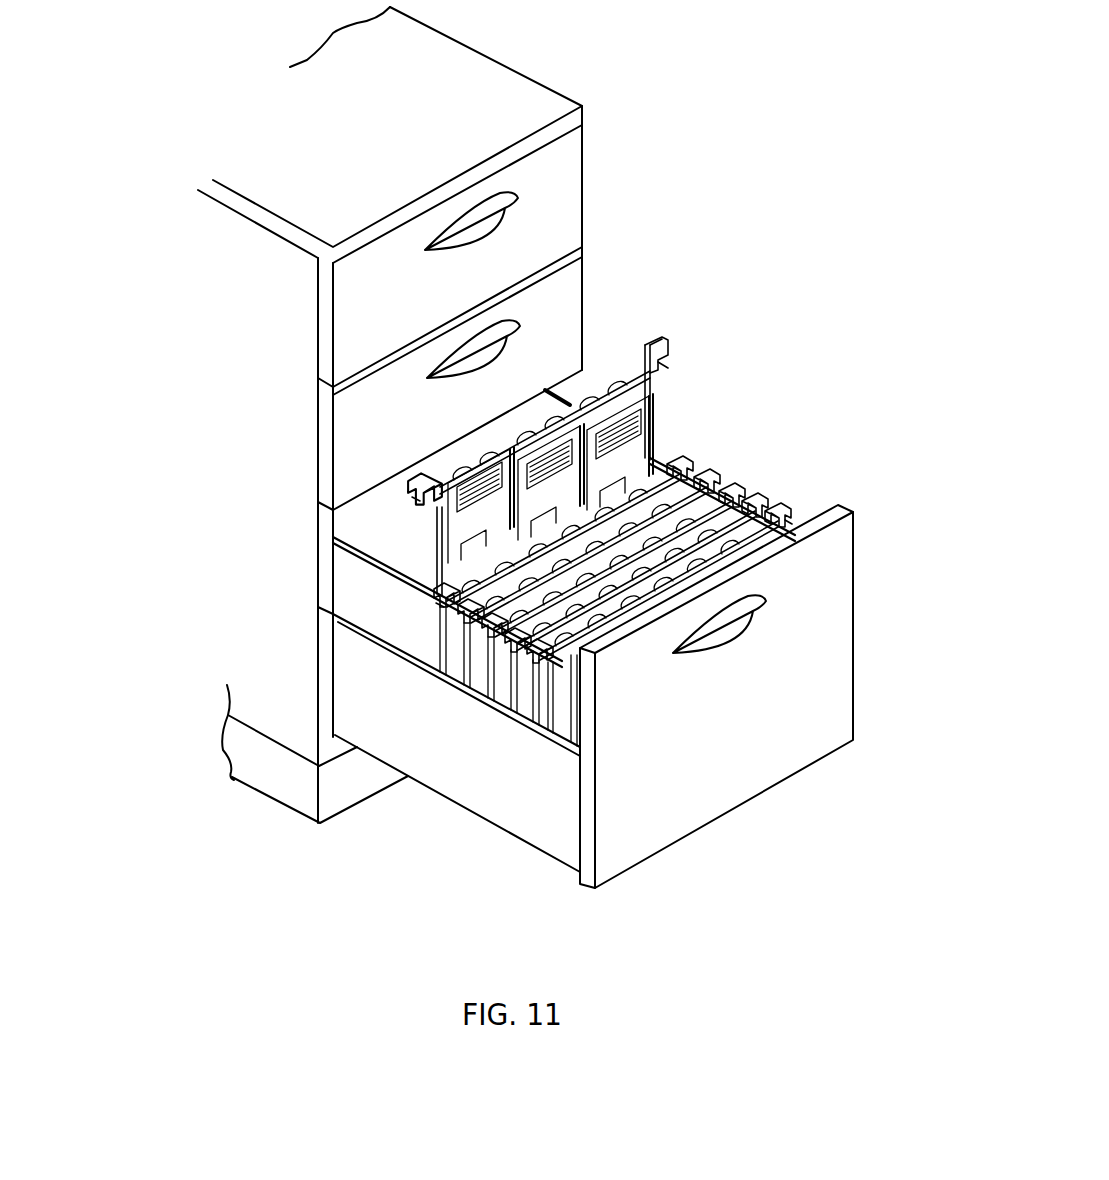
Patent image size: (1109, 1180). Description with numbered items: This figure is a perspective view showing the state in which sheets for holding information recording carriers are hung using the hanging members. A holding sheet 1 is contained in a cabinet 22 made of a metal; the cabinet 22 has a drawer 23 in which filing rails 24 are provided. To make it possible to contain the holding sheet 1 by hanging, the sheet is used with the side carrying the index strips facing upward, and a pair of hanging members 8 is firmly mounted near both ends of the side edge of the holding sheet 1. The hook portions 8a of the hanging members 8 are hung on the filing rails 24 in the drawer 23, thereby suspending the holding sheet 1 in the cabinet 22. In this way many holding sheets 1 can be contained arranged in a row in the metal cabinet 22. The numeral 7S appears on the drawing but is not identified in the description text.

The holding sheet 1 is at (670, 402).
The suspension folders 7S is at (618, 372).
The hanging member 8 is at (650, 343).
The hook portion 8a is at (662, 360).
The cabinet 22 is at (505, 108).
The drawer 23 is at (560, 213).
The filing rail 24 is at (658, 457).